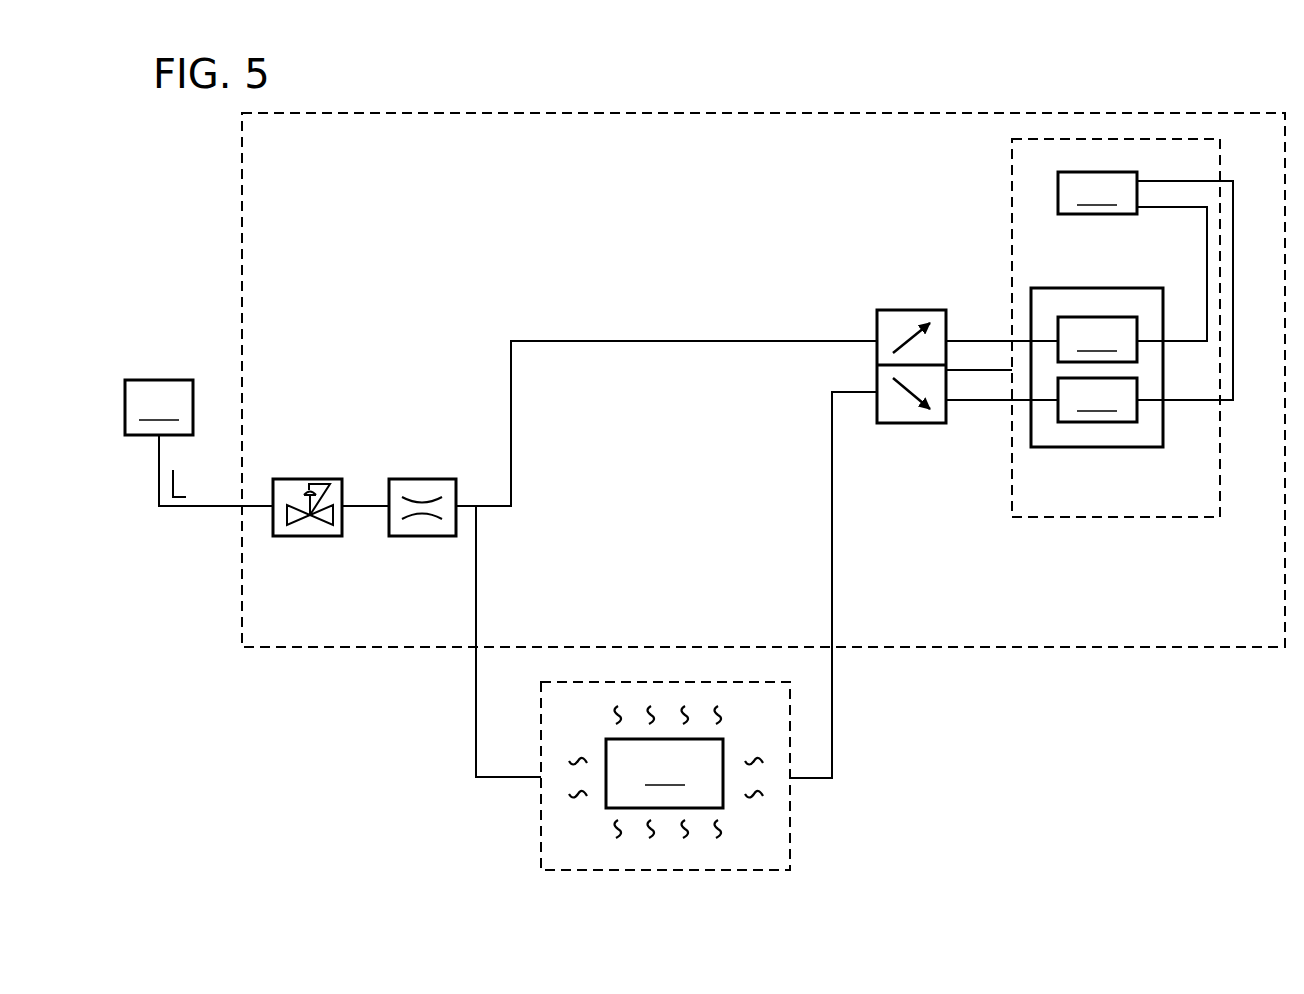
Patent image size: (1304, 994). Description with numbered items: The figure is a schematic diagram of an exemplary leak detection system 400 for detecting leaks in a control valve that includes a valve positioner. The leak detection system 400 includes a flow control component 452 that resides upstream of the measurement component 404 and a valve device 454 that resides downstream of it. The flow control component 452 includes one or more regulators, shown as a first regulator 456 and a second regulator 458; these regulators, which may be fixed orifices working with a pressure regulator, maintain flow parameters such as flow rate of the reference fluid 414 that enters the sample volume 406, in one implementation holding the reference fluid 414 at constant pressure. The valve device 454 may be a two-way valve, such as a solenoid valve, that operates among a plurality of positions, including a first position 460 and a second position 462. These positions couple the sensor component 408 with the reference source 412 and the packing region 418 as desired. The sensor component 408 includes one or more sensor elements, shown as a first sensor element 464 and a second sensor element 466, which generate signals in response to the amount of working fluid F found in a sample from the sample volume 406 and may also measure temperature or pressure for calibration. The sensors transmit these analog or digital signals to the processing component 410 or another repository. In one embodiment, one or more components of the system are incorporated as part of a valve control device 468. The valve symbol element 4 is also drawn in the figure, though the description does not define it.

The leak detection system 400 is at (1077, 770).
The measurement component 404 is at (790, 842).
The sample volume 406 is at (572, 843).
The sensor component 408 is at (1145, 447).
The processing component 410 is at (1145, 286).
The reference source 412 is at (199, 443).
The reference fluid 414 is at (208, 497).
The packing region 418 is at (666, 772).
The flow control component 452 is at (462, 424).
The valve device 454 is at (906, 300).
The first regulator 456 is at (302, 479).
The second regulator 458 is at (413, 479).
The first position 460 is at (944, 306).
The second position 462 is at (952, 424).
The first sensor element 464 is at (1097, 339).
The second sensor element 466 is at (1063, 498).
The valve control device 468 is at (1020, 647).
The valve element 4 is at (311, 523).
The working fluid F is at (760, 797).